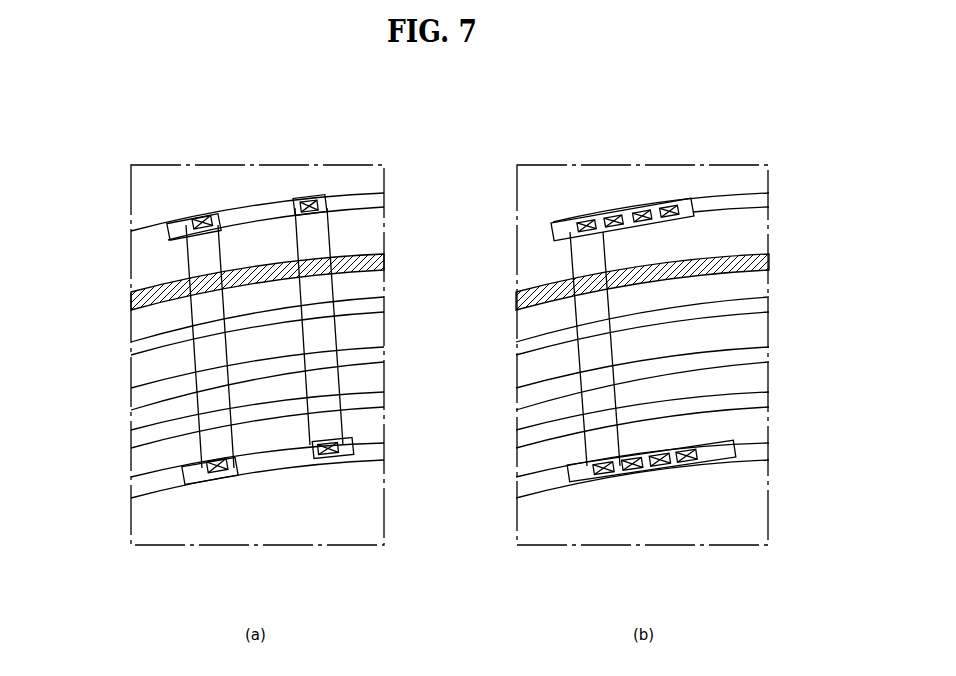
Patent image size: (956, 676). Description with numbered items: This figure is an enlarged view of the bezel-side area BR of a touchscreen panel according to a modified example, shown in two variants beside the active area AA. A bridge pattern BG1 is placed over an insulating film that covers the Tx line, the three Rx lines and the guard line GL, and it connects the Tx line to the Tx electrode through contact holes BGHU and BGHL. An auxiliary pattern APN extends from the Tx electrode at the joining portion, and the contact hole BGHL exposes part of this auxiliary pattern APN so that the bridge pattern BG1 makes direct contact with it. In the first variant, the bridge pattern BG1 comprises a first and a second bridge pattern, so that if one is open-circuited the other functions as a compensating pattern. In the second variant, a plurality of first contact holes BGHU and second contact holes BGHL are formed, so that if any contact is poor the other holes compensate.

The area BR is at (110, 154).
The active area AA is at (545, 529).
The guard line GL is at (380, 260).
The auxiliary pattern APN is at (355, 447).
The bridge pattern BG1 is at (66, 283).
The first contact hole BGHU is at (168, 231).
The second contact hole BGHL is at (183, 470).